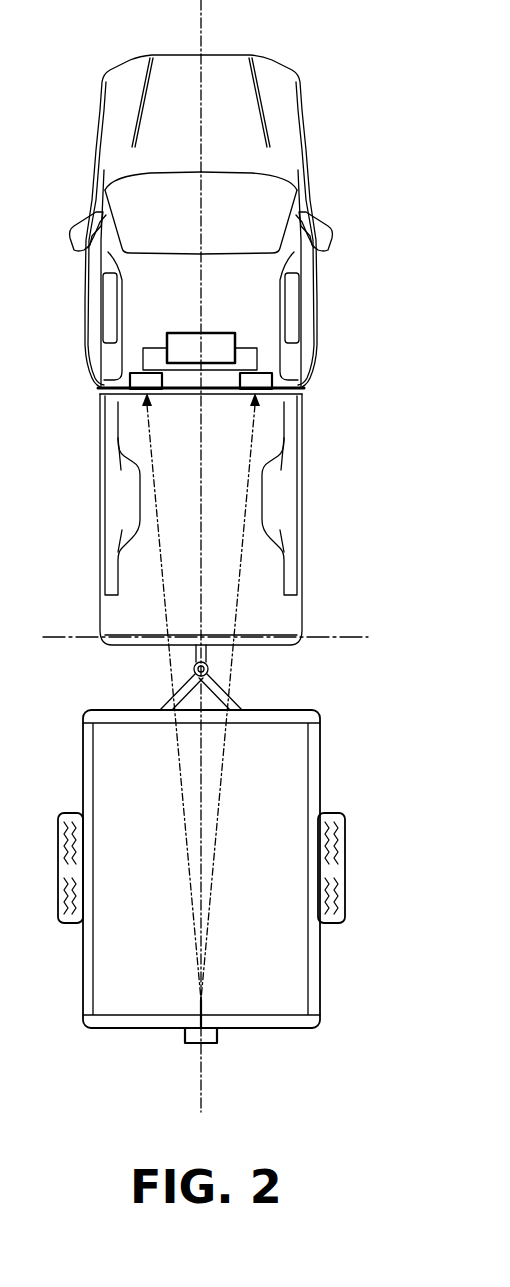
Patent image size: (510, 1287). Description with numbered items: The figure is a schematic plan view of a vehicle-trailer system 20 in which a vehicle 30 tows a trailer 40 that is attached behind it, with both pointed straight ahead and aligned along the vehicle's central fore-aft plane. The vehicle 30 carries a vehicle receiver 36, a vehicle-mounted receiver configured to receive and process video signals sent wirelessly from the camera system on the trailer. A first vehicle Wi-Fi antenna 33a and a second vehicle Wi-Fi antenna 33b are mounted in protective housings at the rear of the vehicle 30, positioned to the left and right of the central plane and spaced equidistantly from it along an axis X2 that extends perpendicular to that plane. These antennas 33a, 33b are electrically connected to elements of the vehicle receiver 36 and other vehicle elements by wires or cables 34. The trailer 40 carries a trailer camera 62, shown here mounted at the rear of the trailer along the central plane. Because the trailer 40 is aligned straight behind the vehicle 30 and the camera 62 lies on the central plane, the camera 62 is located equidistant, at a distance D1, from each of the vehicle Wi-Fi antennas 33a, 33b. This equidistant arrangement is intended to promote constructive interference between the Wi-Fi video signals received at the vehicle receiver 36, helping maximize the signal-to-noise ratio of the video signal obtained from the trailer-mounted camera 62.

The vehicle-trailer system 20 is at (93, 1131).
The vehicle 30 is at (313, 177).
The first vehicle Wi-Fi antenna 33a is at (128, 393).
The second vehicle Wi-Fi antenna 33b is at (274, 393).
The wires or cables 34 is at (150, 366).
The vehicle receiver 36 is at (213, 333).
The trailer 40 is at (138, 948).
The trailer camera 62 is at (218, 1036).
The axis X2 is at (221, 641).
The distance D1 is at (178, 753).